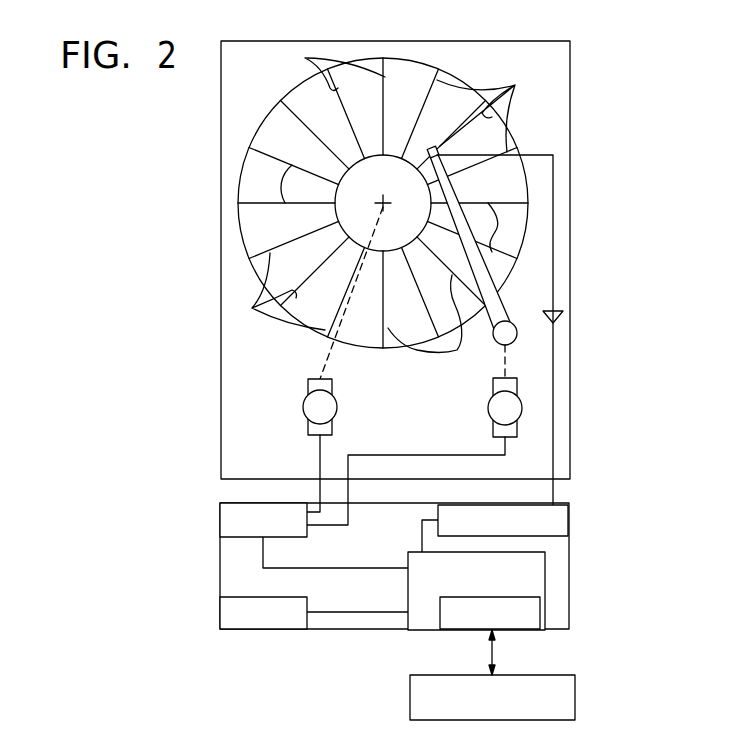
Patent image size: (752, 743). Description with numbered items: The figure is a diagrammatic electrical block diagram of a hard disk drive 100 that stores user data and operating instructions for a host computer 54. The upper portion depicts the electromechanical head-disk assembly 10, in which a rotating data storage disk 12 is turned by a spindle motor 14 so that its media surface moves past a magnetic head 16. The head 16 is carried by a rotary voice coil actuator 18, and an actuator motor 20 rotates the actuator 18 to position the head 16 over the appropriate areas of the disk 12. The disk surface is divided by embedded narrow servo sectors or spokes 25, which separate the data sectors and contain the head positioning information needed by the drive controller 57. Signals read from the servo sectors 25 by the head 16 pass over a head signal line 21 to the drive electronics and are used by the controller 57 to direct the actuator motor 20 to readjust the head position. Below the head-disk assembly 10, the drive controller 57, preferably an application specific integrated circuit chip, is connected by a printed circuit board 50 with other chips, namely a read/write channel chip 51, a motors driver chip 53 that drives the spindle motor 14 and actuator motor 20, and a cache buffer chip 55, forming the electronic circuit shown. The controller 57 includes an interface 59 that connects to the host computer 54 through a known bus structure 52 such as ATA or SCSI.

The head-disk assembly 10 is at (395, 260).
The data storage disk 12 is at (264, 116).
The spindle motor 14 is at (305, 404).
The magnetic head 16 is at (404, 175).
The rotary voice coil actuator 18 is at (480, 336).
The actuator motor 20 is at (488, 415).
The read/write head signal line 21 is at (556, 320).
The servo sectors 25 is at (305, 58).
The printed circuit board 50 is at (220, 562).
The read/write channel chip 51 is at (548, 537).
The bus structure 52 is at (495, 656).
The motors driver chip 53 is at (238, 537).
The host computer 54 is at (410, 702).
The cache buffer chip 55 is at (236, 597).
The drive controller 57 is at (408, 590).
The interface 59 is at (440, 616).
The hard disk drive 100 is at (585, 493).